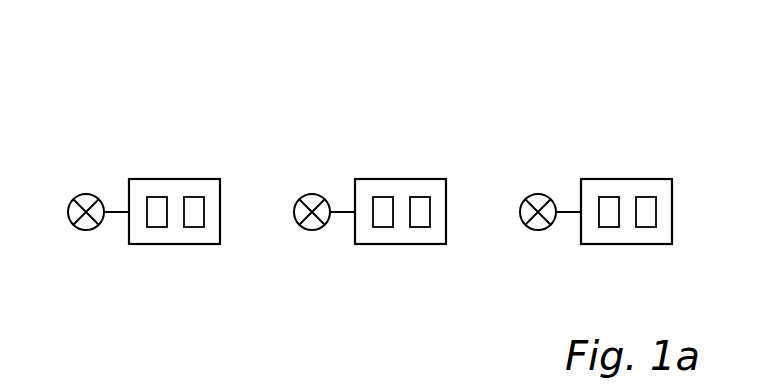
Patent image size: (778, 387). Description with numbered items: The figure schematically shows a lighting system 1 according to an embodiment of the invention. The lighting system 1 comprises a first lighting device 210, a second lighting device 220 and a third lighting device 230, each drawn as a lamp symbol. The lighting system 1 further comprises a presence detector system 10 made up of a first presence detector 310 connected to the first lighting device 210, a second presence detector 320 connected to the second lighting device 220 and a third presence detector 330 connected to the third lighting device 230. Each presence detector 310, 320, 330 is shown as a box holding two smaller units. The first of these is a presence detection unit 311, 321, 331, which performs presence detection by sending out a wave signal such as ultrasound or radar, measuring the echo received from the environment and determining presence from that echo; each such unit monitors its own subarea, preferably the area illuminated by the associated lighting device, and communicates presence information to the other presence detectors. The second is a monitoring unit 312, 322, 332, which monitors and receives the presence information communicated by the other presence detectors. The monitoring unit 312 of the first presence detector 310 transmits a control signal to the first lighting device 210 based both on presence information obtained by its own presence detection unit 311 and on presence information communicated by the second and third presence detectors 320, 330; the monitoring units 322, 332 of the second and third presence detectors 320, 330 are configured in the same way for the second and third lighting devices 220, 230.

The lighting system 1 is at (478, 92).
The presence detector system 10 is at (582, 79).
The first lighting device 210 is at (88, 194).
The second lighting device 220 is at (314, 194).
The third lighting device 230 is at (540, 194).
The first presence detector 310 is at (174, 179).
The second presence detector 320 is at (400, 179).
The third presence detector 330 is at (626, 179).
The presence detection unit 311 is at (155, 228).
The monitoring unit 312 is at (193, 228).
The presence detection unit 321 is at (381, 228).
The monitoring unit 322 is at (419, 228).
The presence detection unit 331 is at (607, 228).
The monitoring unit 332 is at (645, 228).